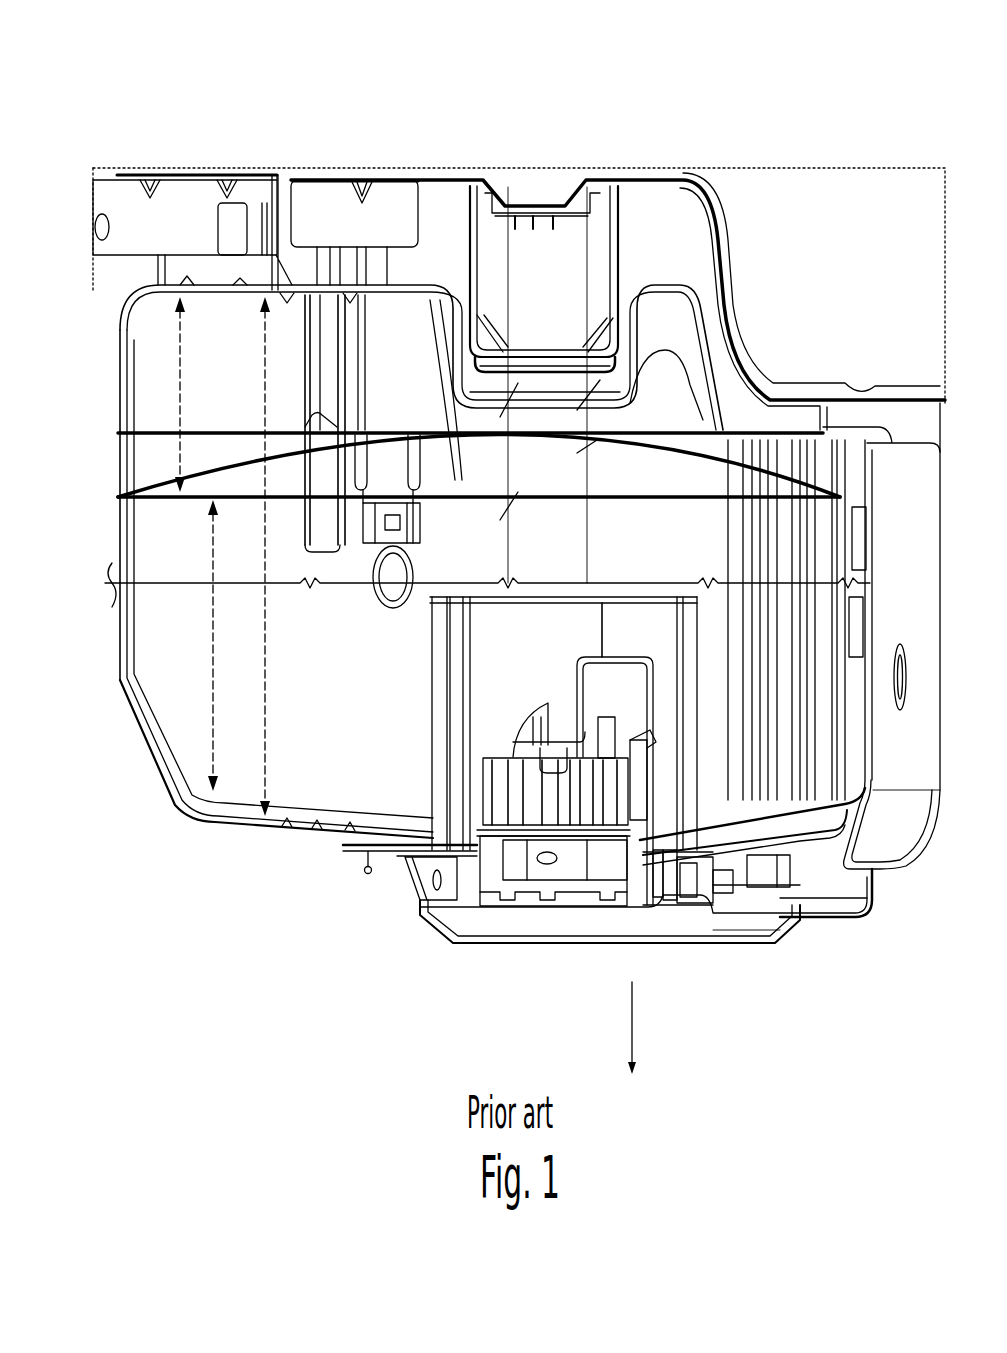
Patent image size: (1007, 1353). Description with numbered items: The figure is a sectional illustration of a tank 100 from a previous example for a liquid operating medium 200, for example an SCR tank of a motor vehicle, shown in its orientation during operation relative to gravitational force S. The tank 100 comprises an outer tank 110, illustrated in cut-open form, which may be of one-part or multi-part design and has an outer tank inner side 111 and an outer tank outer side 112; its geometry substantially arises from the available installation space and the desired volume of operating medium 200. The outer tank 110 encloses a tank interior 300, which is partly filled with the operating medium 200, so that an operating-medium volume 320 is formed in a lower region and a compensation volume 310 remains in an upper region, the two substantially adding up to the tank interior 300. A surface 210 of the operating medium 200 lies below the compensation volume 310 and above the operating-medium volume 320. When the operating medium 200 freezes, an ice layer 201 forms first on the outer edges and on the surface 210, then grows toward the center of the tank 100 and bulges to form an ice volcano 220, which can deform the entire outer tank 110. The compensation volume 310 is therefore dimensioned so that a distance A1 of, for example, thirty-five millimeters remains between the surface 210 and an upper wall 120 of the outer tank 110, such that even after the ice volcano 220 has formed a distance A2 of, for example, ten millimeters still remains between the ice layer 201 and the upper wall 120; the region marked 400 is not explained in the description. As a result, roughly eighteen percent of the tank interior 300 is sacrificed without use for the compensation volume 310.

The tank 100 is at (189, 128).
The outer tank 110 is at (315, 425).
The outer tank inner side 111 is at (742, 800).
The outer tank outer side 112 is at (785, 918).
The upper wall 120 is at (560, 470).
The operating medium 200 is at (365, 705).
The ice layer 201 is at (343, 480).
The surface 210 is at (390, 470).
The ice volcano 220 is at (645, 450).
The tank interior 300 is at (265, 705).
The compensation volume 310 is at (180, 472).
The operating-medium volume 320 is at (213, 622).
The boundary region 400 is at (893, 268).
The distance A1 is at (505, 500).
The distance A2 is at (586, 583).
The gravitational force S is at (625, 1028).